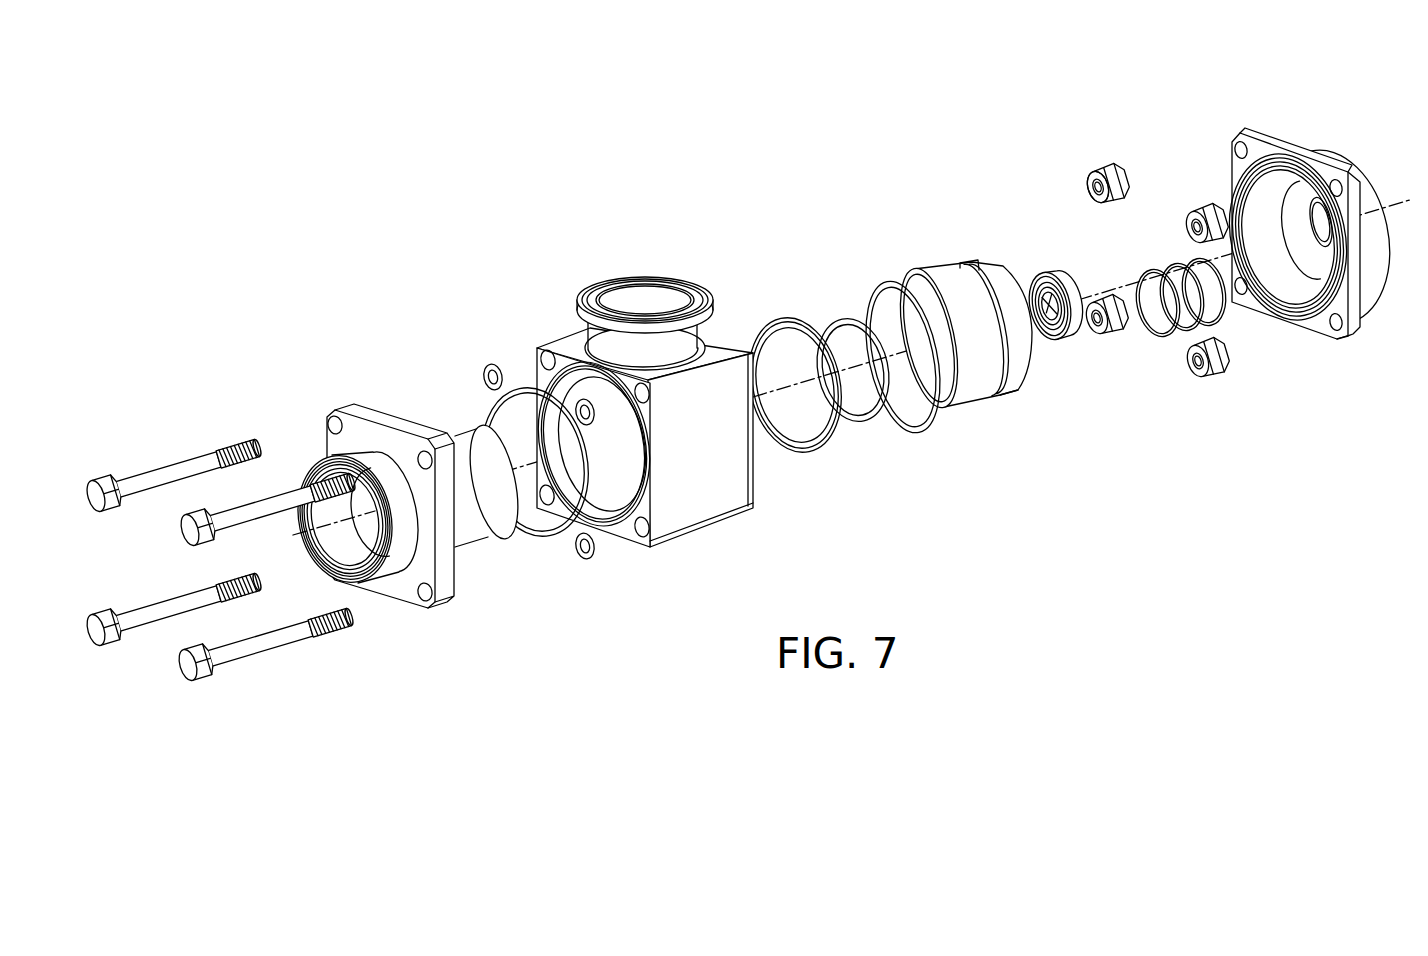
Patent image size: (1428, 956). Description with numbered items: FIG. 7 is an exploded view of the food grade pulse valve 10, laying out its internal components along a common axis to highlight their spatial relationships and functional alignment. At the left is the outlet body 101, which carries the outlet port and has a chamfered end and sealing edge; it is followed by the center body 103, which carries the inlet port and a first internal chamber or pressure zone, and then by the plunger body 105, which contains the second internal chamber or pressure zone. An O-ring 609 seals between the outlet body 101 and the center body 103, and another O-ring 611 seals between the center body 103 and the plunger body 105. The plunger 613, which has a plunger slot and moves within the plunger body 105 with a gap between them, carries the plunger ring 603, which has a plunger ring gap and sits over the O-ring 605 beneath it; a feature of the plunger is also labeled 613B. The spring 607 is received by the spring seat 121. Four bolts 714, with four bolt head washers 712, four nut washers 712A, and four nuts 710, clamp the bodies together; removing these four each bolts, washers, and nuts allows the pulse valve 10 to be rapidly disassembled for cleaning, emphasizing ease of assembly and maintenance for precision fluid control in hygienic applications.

The food grade pulse valve 10 is at (493, 217).
The outlet body 101 is at (485, 532).
The center body 103 is at (740, 523).
The plunger body 105 is at (1357, 337).
The spring seat 121 is at (1057, 337).
The plunger ring 603 is at (775, 318).
The O-ring 605 is at (835, 316).
The spring 607 is at (1240, 335).
The O-ring 609 is at (547, 538).
The O-ring 611 is at (920, 430).
The plunger 613 is at (933, 272).
The adapter lip 613B is at (1022, 388).
The nuts 710 is at (1100, 170).
The bolt head washers 712 is at (483, 372).
The nut washers 712A is at (1089, 198).
The bolts 714 is at (142, 473).